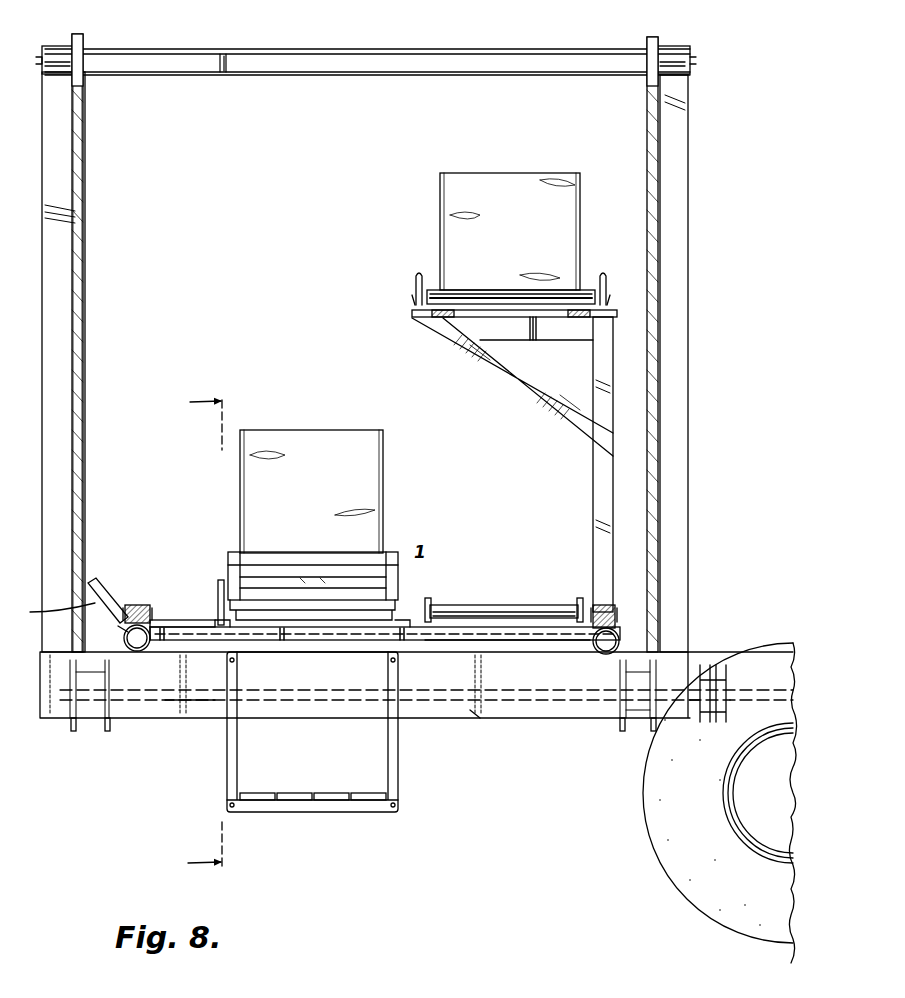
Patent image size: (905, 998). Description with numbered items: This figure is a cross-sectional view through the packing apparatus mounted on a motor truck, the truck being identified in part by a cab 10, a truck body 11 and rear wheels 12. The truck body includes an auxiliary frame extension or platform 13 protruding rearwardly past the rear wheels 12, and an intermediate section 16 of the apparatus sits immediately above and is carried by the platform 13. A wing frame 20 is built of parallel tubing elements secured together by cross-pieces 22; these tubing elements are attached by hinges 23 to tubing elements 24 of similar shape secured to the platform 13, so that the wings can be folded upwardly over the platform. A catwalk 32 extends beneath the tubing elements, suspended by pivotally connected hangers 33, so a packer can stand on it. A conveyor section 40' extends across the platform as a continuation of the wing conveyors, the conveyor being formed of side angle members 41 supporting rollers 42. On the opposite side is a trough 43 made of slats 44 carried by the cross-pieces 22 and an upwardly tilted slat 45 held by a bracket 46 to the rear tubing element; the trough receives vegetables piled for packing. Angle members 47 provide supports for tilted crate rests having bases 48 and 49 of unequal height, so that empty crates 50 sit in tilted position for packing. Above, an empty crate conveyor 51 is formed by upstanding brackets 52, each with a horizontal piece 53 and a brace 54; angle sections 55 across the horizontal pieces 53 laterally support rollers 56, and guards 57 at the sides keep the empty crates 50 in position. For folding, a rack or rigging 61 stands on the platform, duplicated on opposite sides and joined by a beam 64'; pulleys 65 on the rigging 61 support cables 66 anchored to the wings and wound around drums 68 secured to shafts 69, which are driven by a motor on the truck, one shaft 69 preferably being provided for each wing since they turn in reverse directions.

The cab 10 is at (188, 636).
The truck body 11 is at (708, 652).
The rear wheels 12 is at (660, 846).
The auxiliary frame extension or platform 13 is at (483, 719).
The intermediate section 16 is at (342, 643).
The frame 20 is at (165, 643).
The cross-pieces 22 is at (478, 642).
The hinges 23 is at (137, 604).
The tubing elements 24 is at (136, 651).
The catwalk 32 is at (330, 793).
The hangers 33 is at (399, 774).
The conveyor section 40' is at (504, 589).
The angle members 41 is at (430, 600).
The rollers 42 is at (516, 611).
The trough 43 is at (99, 580).
The slats 44 is at (180, 618).
The upwardly tilted slat 45 is at (50, 610).
The bracket 46 is at (120, 628).
The support bracket 47 is at (242, 617).
The base 48 is at (280, 562).
The base 49 is at (314, 581).
The empty crates 50 is at (525, 182).
The empty crate conveyor 51 is at (456, 296).
The upstanding brackets 52 is at (596, 463).
The horizontal piece 53 is at (549, 335).
The brace 54 is at (518, 382).
The angle sections 55 is at (438, 318).
The rollers 56 is at (515, 300).
The guards 57 is at (413, 288).
The rack or rigging 61 is at (46, 185).
The beam 64' is at (367, 84).
The pulleys 65 is at (84, 46).
The cables 66 is at (84, 228).
The drums 68 is at (73, 732).
The shafts 69 is at (212, 706).